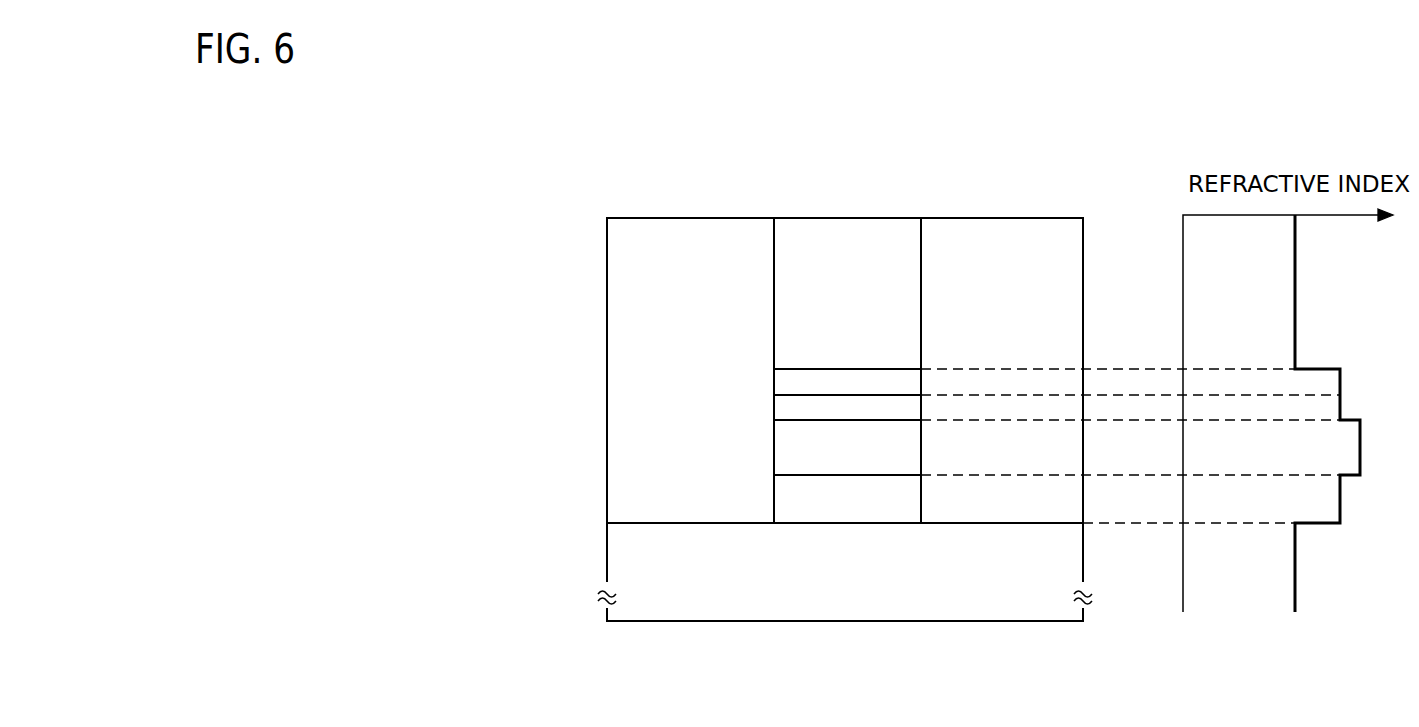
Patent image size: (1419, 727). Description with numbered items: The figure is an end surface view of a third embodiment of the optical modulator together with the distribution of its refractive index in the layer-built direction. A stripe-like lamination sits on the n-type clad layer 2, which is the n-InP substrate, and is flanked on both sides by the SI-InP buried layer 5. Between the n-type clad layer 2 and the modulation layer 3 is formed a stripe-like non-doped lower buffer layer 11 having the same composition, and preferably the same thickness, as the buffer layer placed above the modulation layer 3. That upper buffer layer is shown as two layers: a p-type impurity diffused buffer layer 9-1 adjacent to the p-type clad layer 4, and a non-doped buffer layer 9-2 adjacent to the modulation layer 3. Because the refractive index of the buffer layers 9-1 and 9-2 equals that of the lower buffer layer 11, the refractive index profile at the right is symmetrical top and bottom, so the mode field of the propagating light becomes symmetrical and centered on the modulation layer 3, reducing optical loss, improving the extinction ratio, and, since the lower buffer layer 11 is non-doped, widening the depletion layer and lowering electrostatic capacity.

The SI-InP buried layer 5 is at (965, 228).
The p-type clad layer 4 is at (786, 270).
The p-type impurity diffused buffer layer 9-1 is at (784, 379).
The non-doped buffer layer 9-2 is at (784, 408).
The modulation layer 3 is at (784, 450).
The non-doped lower buffer layer 11 is at (784, 501).
The n-type clad layer 2 is at (648, 582).